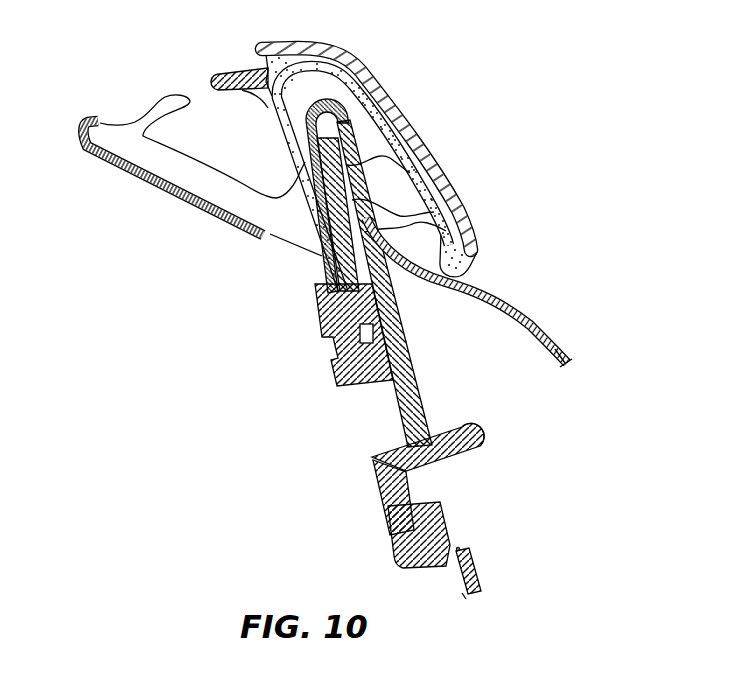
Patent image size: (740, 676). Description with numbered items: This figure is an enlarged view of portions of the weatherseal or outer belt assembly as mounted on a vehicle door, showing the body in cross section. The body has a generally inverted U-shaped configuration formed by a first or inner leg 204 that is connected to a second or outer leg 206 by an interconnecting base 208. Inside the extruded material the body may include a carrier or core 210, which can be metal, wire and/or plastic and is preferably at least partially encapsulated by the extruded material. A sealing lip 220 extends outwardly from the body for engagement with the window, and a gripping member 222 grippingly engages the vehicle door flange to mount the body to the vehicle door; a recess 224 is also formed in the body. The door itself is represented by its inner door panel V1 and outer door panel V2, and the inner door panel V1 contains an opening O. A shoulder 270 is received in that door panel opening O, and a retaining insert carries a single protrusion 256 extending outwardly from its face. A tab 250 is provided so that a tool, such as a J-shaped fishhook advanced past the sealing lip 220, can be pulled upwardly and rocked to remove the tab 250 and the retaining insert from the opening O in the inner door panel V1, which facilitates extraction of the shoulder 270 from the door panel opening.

The inner leg 204 is at (318, 262).
The outer leg 206 is at (415, 130).
The base 208 is at (314, 53).
The carrier 210 is at (362, 98).
The sealing lip 220 is at (157, 174).
The gripping member 222 is at (380, 220).
The recess 224 is at (473, 282).
The tab 250 is at (407, 557).
The first protrusion 256 is at (452, 460).
The shoulder 270 is at (472, 424).
The opening in inner door panel O is at (460, 550).
The inner door panel V1 is at (478, 562).
The outer door panel V2 is at (548, 334).